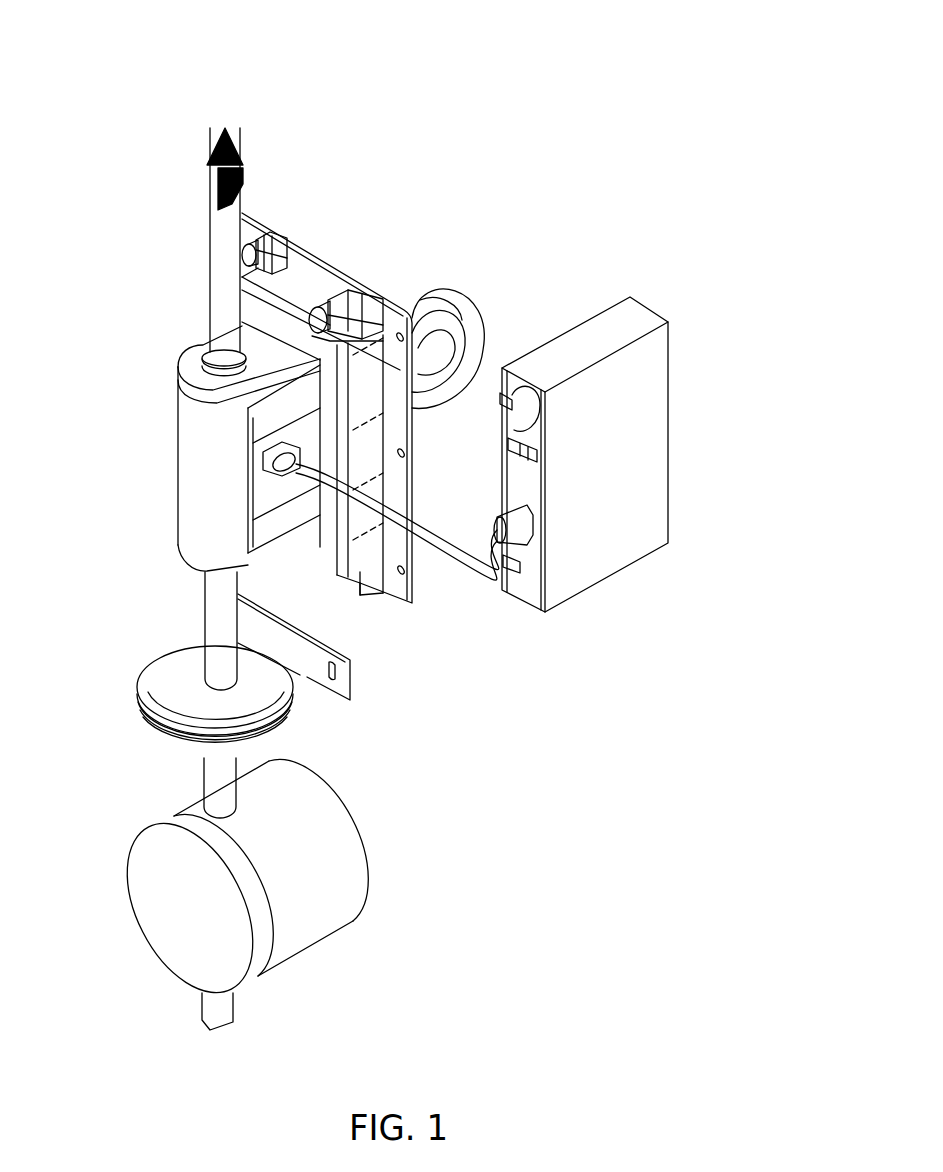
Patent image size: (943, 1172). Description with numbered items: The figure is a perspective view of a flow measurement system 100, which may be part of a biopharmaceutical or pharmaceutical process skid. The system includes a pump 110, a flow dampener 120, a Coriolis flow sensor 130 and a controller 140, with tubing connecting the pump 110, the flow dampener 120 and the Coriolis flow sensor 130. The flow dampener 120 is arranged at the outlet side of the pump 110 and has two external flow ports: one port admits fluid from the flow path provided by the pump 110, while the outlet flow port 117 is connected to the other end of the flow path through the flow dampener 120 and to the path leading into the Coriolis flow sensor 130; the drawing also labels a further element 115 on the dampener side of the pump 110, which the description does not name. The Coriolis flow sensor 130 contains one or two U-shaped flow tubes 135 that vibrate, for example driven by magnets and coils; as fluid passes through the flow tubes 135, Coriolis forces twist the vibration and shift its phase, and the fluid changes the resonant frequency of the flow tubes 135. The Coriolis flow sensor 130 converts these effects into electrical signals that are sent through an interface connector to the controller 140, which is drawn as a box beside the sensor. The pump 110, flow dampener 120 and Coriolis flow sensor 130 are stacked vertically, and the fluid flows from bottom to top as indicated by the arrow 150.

The flow measurement system 100 is at (420, 38).
The pump 110 is at (263, 688).
The lower shaft section 115 is at (215, 775).
The outlet flow port 117 is at (220, 667).
The flow dampener 120 is at (340, 888).
The Coriolis flow sensor 130 is at (303, 297).
The flow tubes 135 is at (478, 326).
The controller 140 is at (647, 397).
The arrow 150 is at (207, 164).